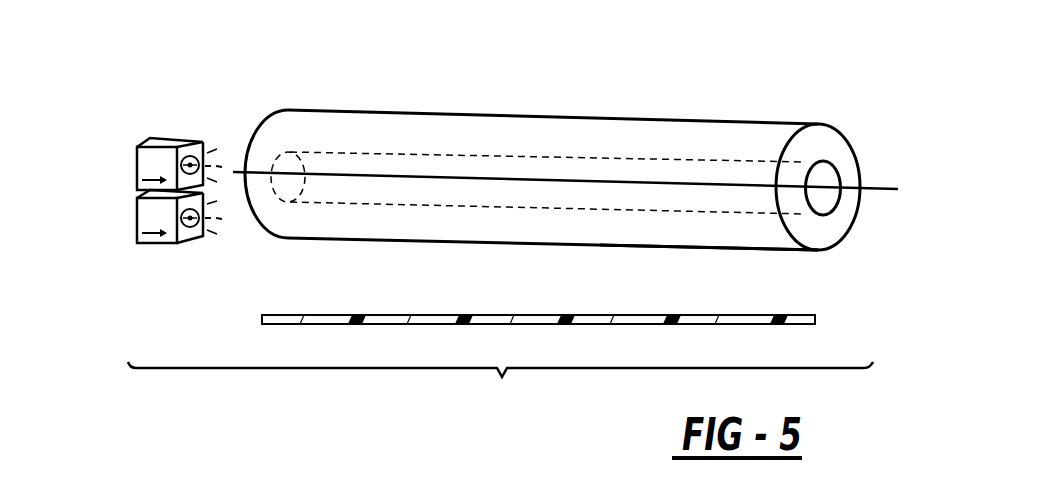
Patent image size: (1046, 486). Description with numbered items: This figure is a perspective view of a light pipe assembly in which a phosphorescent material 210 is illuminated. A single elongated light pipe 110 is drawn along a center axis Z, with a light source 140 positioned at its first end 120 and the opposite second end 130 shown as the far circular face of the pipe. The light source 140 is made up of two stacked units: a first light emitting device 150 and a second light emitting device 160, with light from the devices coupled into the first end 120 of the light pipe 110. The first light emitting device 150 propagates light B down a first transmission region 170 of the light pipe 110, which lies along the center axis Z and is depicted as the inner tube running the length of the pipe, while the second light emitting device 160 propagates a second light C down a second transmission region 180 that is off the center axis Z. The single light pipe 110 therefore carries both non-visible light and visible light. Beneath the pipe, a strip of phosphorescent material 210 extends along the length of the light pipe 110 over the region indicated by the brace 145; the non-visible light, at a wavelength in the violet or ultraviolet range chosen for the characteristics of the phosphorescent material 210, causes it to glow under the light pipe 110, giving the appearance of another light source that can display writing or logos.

The light pipe 110 is at (583, 164).
The first end 120 is at (238, 236).
The second end 130 is at (858, 215).
The light source 140 is at (149, 176).
The scan region 145 is at (500, 388).
The first light emitting device 150 is at (176, 150).
The second light emitting device 160 is at (160, 245).
The first transmission region 170 is at (805, 162).
The second transmission region 180 is at (757, 246).
The phosphorescent material 210 is at (720, 325).